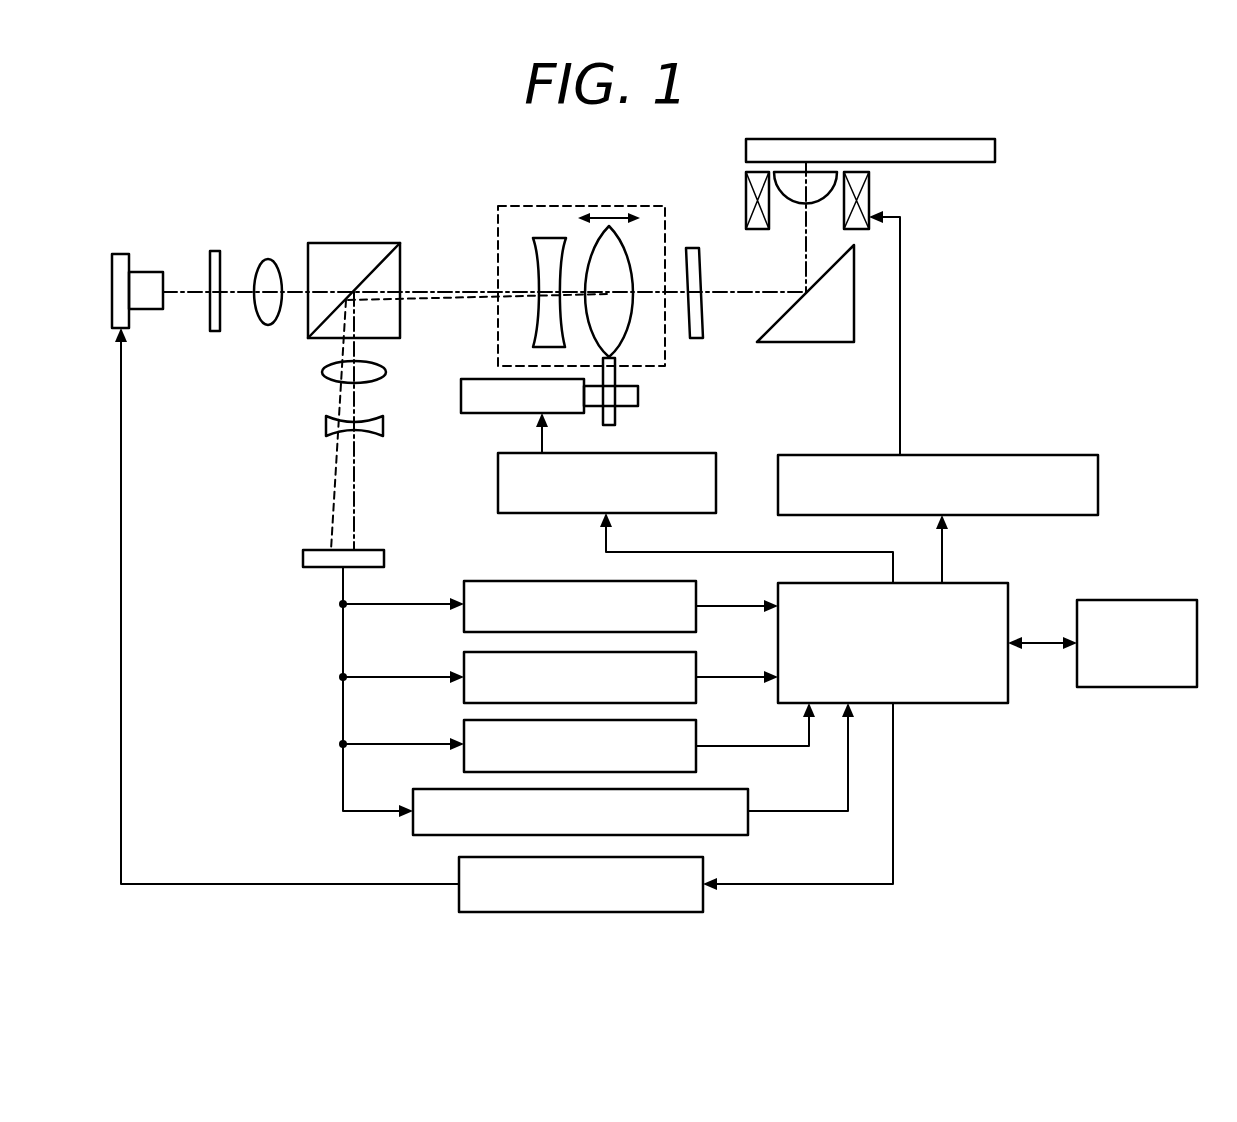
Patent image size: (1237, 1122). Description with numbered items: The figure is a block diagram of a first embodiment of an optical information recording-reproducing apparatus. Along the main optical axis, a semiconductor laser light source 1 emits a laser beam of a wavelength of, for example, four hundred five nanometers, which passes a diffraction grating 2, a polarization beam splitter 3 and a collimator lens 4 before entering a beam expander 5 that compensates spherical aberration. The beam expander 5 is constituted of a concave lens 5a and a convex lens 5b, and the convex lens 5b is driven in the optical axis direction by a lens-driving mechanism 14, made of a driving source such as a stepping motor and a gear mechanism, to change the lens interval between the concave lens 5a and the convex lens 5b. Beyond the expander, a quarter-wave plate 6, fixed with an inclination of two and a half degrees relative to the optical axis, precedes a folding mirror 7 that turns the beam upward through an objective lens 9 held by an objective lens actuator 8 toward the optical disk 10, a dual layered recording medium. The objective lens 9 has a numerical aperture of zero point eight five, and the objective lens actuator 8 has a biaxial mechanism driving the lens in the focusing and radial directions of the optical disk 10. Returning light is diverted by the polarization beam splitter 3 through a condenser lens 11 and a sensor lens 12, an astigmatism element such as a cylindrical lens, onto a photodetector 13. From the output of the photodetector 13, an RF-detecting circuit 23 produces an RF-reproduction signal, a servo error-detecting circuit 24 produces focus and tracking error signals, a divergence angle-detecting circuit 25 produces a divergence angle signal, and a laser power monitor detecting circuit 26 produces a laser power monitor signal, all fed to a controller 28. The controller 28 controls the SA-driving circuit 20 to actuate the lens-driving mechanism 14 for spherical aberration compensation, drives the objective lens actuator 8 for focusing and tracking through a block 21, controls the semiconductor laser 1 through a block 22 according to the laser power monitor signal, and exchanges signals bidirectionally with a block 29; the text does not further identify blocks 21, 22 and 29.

The light source 1 is at (121, 254).
The diffraction grating 2 is at (214, 251).
The polarization beam splitter 3 is at (363, 243).
The collimator lens 4 is at (269, 259).
The beam expander 5 is at (587, 254).
The concave lens 5a is at (545, 238).
The convex lens 5b is at (626, 250).
The quarter-wave plate 6 is at (696, 338).
The folding mirror 7 is at (809, 342).
The objective lens actuator 8 is at (869, 190).
The objective lens 9 is at (798, 203).
The optical disk 10 is at (746, 150).
The condenser lens 11 is at (322, 372).
The sensor lens 12 is at (326, 427).
The photodetector 13 is at (303, 558).
The lens-driving mechanism 14 is at (475, 379).
The SA-driving circuit 20 is at (590, 499).
The actuator drive circuit 21 is at (924, 501).
The laser drive circuit 22 is at (564, 901).
The RF-detecting circuit 23 is at (564, 622).
The servo error-detecting circuit 24 is at (564, 693).
The divergence angle-detecting circuit 25 is at (564, 761).
The laser power monitor detecting circuit 26 is at (564, 827).
The controller 28 is at (877, 659).
The host computer 29 is at (1121, 659).